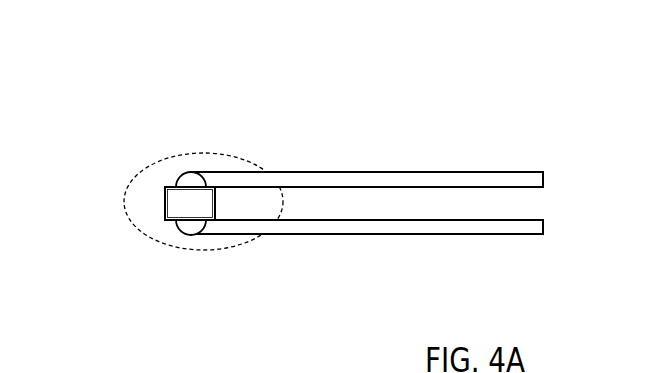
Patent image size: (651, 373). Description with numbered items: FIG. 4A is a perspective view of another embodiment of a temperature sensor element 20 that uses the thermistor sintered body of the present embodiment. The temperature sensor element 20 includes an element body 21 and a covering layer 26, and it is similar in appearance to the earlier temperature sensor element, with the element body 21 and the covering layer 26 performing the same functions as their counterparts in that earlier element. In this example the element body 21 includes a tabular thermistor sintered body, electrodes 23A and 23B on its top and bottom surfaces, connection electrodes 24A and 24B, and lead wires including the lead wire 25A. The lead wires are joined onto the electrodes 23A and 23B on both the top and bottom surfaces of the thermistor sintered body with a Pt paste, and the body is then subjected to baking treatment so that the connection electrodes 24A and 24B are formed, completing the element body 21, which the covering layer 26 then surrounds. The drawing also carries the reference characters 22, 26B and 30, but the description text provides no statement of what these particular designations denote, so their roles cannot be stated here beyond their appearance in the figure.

The temperature sensor element 20 is at (327, 77).
The element body 21 is at (327, 165).
The connecting portion 22 is at (165, 205).
The electrode 23A is at (175, 187).
The electrode 23B is at (172, 220).
The connection electrode 24A is at (190, 172).
The connection electrode 24B is at (190, 235).
The lead wire 25A is at (425, 172).
The covering layer 26 is at (124, 207).
The second substrate layer 26B is at (417, 234).
The housing 30 is at (298, 365).